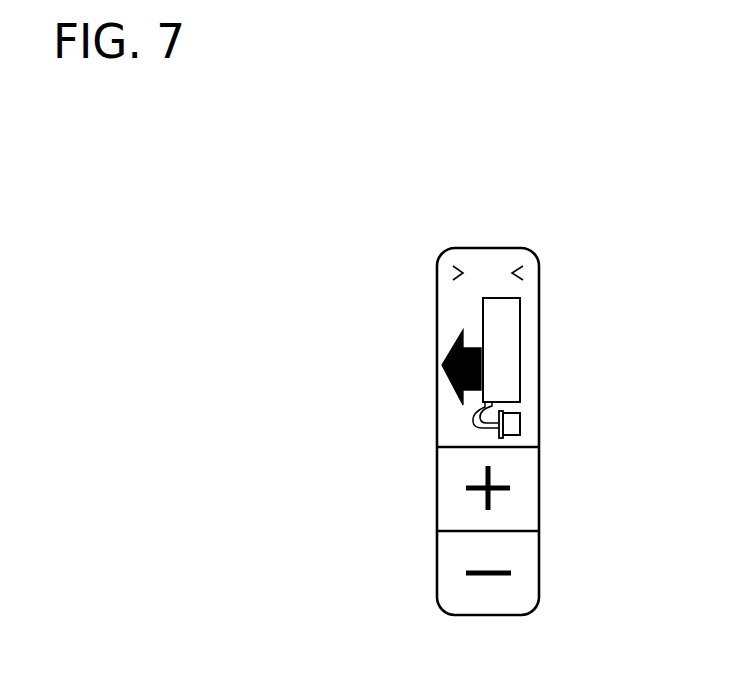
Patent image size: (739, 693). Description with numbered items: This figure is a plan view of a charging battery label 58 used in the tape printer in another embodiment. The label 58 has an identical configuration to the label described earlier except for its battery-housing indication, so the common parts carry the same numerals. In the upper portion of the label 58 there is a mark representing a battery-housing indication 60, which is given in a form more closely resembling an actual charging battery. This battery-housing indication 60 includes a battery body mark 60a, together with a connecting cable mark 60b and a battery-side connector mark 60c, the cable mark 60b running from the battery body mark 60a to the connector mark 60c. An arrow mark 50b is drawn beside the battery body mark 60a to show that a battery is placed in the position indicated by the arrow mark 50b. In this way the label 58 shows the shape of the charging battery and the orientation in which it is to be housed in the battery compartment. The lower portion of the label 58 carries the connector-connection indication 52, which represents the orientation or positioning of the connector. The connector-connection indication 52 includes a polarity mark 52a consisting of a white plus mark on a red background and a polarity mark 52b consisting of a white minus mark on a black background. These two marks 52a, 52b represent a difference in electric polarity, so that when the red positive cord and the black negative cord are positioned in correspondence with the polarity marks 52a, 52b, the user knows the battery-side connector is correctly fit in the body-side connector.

The label 58 is at (543, 224).
The battery-housing indication 60 is at (570, 253).
The battery body mark 60a is at (483, 326).
The arrow mark 50b is at (442, 365).
The connecting cable mark 60b is at (473, 414).
The battery-side connector mark 60c is at (498, 430).
The connector-connection indication 52 is at (570, 450).
The polarity mark 52a is at (437, 513).
The polarity mark 52b is at (437, 592).